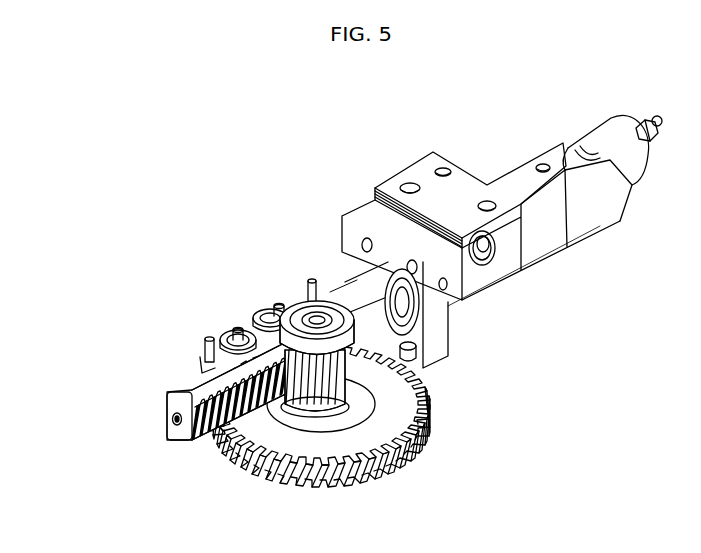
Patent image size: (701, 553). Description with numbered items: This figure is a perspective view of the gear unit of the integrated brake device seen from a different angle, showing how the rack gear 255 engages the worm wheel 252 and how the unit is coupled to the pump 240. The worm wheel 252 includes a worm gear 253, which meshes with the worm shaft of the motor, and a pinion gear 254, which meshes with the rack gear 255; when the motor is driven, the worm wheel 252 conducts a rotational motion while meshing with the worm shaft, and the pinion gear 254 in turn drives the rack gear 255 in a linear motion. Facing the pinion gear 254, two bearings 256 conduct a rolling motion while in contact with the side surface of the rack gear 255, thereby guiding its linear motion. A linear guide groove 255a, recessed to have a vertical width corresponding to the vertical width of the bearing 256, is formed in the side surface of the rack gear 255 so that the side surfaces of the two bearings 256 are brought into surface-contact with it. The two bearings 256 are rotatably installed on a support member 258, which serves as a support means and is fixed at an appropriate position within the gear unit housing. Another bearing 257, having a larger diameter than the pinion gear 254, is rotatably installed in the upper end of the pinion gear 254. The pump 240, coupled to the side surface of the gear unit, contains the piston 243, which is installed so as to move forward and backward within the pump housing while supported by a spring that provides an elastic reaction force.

The pump 240 is at (399, 149).
The piston 243 is at (358, 288).
The worm wheel 252 is at (334, 368).
The worm gear 253 is at (427, 430).
The pinion gear 254 is at (427, 389).
The rack gear 255 is at (179, 421).
The linear guide groove 255a is at (163, 411).
The bearing 256 is at (258, 309).
The bearing 257 is at (297, 302).
The support member 258 is at (200, 363).